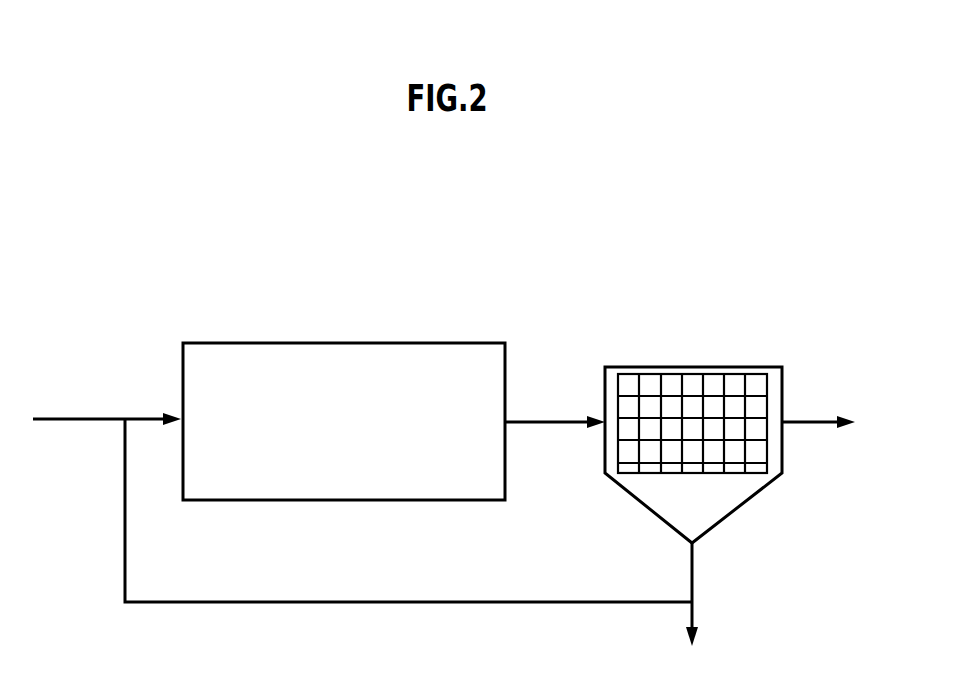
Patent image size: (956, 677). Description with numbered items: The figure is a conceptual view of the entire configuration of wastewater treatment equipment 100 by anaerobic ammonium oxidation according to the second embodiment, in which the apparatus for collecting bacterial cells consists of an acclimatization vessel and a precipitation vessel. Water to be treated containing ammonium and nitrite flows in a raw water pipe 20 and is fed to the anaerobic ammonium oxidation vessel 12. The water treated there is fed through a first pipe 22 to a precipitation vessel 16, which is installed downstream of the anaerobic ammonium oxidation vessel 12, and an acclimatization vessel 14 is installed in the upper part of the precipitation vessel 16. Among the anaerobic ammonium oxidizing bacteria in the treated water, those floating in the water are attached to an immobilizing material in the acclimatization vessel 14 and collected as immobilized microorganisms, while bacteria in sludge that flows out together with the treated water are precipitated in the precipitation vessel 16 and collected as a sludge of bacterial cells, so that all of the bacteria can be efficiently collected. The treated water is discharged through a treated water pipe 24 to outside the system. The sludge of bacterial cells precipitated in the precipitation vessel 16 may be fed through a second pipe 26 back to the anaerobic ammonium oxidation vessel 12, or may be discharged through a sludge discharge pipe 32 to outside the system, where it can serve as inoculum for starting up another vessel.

The wastewater treatment equipment 100 is at (553, 285).
The anaerobic ammonium oxidation vessel 12 is at (350, 501).
The acclimatization vessel 14 is at (697, 370).
The precipitation vessel 16 is at (647, 510).
The raw water pipe 20 is at (72, 421).
The first pipe 22 is at (560, 425).
The treated water pipe 24 is at (820, 425).
The second pipe 26 is at (417, 604).
The sludge discharge pipe 32 is at (695, 613).